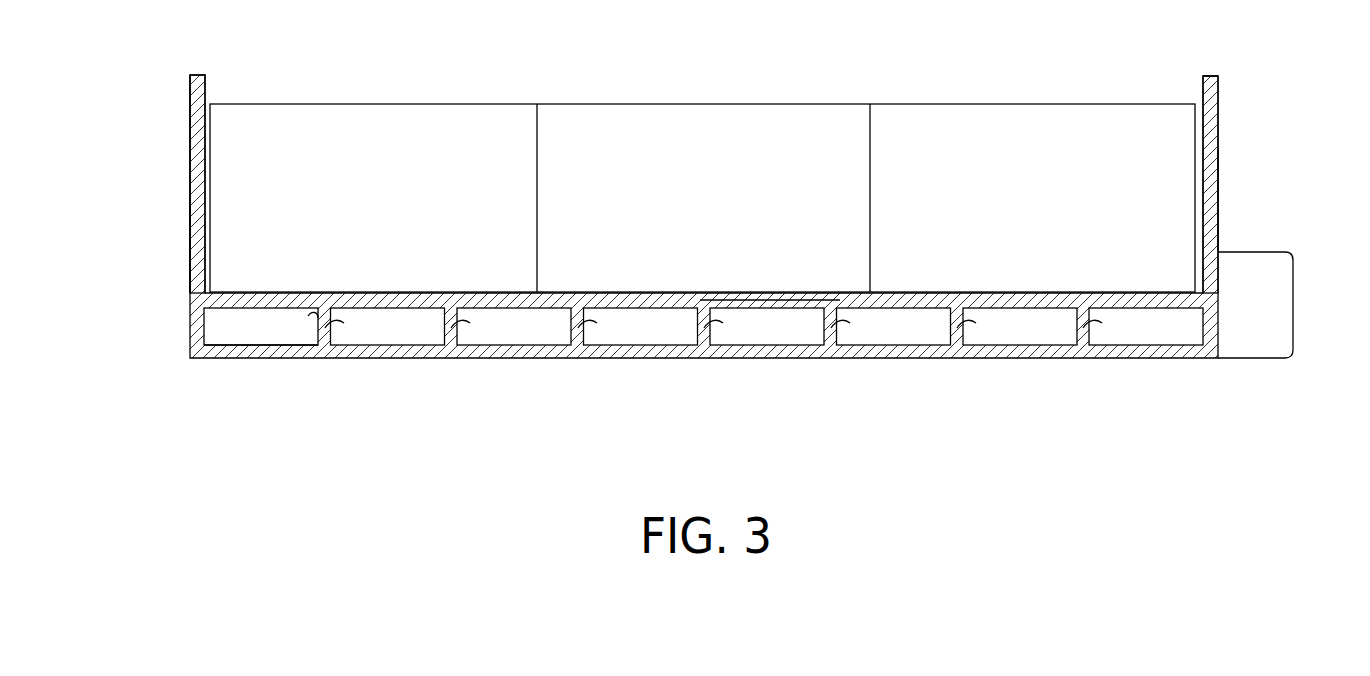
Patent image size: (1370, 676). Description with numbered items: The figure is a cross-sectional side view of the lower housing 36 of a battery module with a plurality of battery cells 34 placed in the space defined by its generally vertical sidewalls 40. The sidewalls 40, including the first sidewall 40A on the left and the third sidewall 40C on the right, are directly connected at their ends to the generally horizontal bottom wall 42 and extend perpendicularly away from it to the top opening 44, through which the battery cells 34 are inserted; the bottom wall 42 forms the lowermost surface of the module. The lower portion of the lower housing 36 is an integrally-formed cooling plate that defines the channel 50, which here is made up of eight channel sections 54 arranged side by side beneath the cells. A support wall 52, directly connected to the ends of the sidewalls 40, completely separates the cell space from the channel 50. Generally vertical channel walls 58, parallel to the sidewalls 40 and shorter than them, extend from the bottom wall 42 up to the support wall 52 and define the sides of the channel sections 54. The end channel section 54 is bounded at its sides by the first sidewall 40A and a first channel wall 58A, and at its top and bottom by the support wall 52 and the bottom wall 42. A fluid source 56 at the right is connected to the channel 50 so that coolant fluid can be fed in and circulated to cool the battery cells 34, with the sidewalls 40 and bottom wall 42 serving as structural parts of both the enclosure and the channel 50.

The battery cells 34 is at (366, 148).
The lower housing 36 is at (191, 178).
The sidewalls 40 is at (191, 110).
The first sidewall 40A is at (199, 240).
The third sidewall 40C is at (1208, 212).
The bottom wall 42 is at (400, 352).
The top opening 44 is at (1175, 80).
The channel 50 is at (221, 336).
The support wall 52 is at (801, 299).
The channel sections 54 is at (248, 338).
The fluid source 56 is at (1265, 309).
The channel walls 58 is at (325, 328).
The first channel wall 58A is at (318, 318).